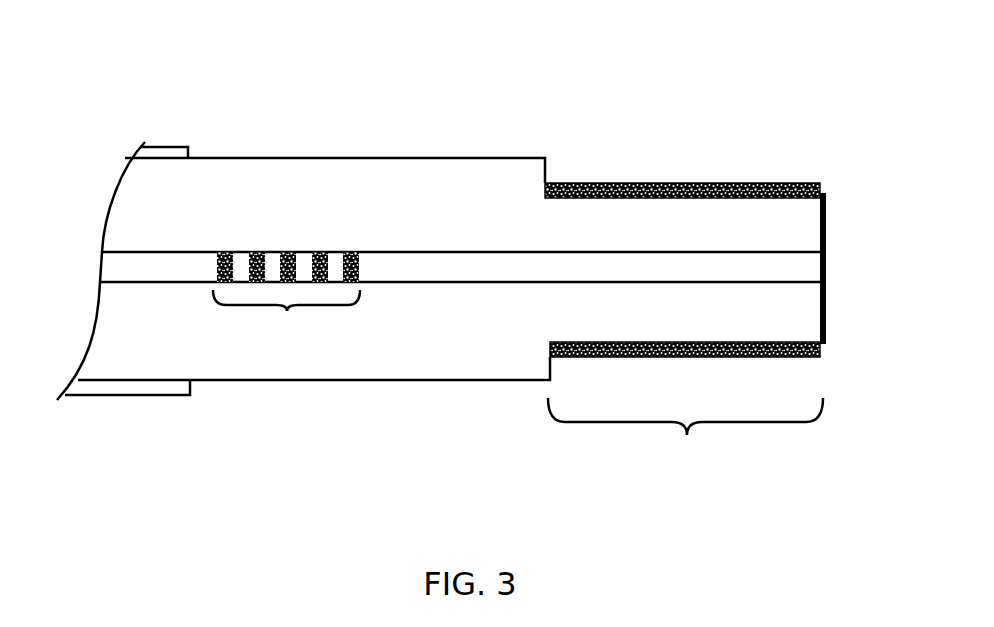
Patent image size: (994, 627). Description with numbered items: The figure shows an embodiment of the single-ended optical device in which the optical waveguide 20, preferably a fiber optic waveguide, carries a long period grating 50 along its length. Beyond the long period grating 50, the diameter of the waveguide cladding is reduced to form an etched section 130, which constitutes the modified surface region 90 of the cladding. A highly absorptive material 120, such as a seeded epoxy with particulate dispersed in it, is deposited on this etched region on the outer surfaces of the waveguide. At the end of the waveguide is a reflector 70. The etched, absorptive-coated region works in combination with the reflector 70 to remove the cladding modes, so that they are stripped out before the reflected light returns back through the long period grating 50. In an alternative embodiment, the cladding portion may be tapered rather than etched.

The optical waveguide 20 is at (97, 268).
The long period grating 50 is at (286, 299).
The reflector 70 is at (828, 215).
The modified surface region 90 is at (640, 88).
The highly absorptive material 120 is at (722, 182).
The etched section 130 is at (685, 433).